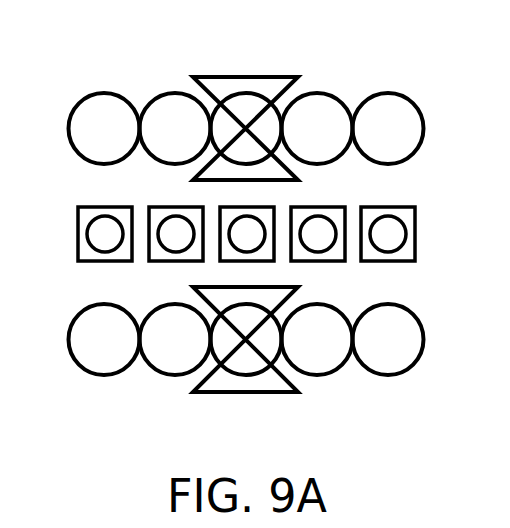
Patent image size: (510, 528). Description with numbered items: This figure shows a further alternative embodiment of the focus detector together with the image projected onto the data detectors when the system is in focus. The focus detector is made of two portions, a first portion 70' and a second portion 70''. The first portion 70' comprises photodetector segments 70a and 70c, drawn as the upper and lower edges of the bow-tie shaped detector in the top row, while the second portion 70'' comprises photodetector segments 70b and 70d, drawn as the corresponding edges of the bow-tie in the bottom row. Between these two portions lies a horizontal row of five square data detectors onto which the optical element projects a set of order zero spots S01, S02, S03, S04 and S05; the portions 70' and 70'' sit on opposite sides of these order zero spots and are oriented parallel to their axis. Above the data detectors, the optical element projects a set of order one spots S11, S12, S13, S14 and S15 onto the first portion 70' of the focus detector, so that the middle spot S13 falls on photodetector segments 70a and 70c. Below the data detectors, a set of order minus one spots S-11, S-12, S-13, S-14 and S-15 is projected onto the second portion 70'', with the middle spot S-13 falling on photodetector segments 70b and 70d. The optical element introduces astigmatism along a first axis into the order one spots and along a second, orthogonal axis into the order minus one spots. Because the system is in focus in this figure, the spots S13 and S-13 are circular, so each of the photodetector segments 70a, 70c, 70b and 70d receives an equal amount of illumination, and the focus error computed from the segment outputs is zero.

The order 1 spot S11 is at (87, 110).
The order 1 spot S12 is at (162, 103).
The order 1 spot S13 is at (237, 110).
The order 1 spot S14 is at (327, 103).
The order 1 spot S15 is at (397, 110).
The order 0 spot S01 is at (97, 233).
The order 0 spot S02 is at (175, 243).
The order 0 spot S03 is at (245, 230).
The order 0 spot S04 is at (327, 232).
The order 0 spot S05 is at (388, 233).
The order −1 spot S-11 is at (78, 350).
The order −1 spot S-12 is at (175, 367).
The order −1 spot S-13 is at (238, 367).
The order −1 spot S-14 is at (327, 367).
The order −1 spot S-15 is at (407, 350).
The focus detector portion 70' is at (245, 100).
The focus detector portion 70'' is at (245, 367).
The photodetector segment 70a is at (268, 85).
The photodetector segment 70c is at (277, 173).
The photodetector segment 70b is at (278, 297).
The photodetector segment 70d is at (278, 385).